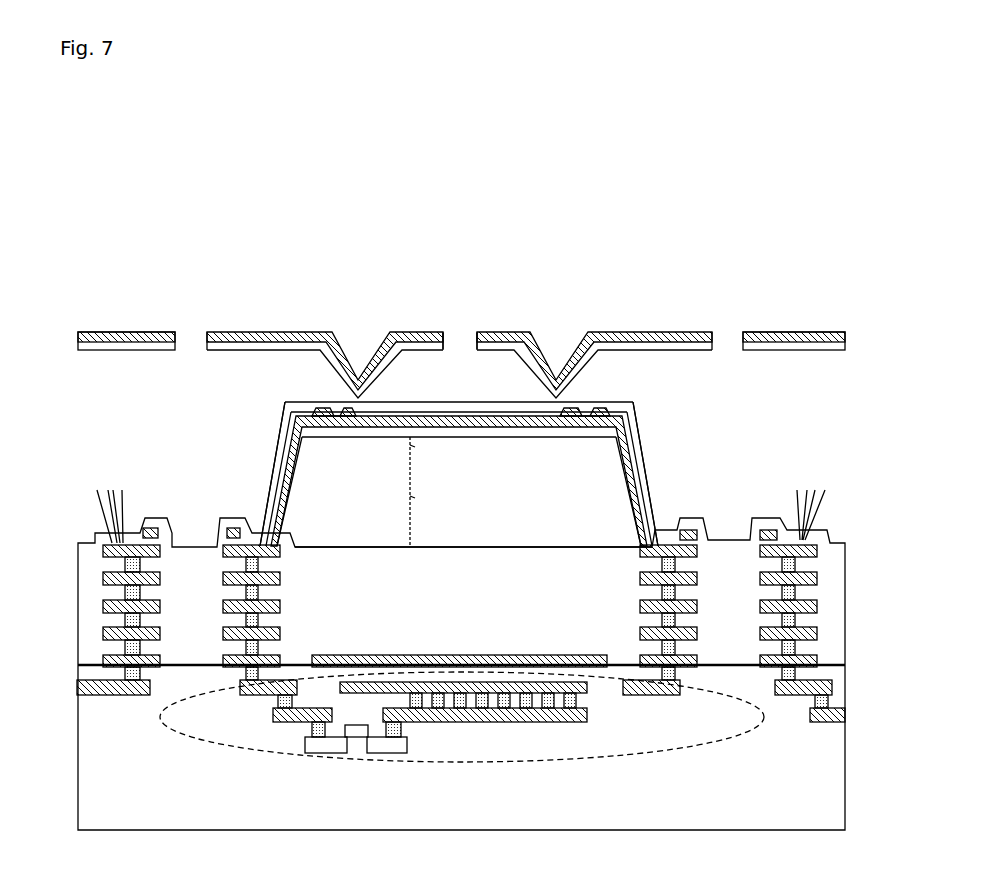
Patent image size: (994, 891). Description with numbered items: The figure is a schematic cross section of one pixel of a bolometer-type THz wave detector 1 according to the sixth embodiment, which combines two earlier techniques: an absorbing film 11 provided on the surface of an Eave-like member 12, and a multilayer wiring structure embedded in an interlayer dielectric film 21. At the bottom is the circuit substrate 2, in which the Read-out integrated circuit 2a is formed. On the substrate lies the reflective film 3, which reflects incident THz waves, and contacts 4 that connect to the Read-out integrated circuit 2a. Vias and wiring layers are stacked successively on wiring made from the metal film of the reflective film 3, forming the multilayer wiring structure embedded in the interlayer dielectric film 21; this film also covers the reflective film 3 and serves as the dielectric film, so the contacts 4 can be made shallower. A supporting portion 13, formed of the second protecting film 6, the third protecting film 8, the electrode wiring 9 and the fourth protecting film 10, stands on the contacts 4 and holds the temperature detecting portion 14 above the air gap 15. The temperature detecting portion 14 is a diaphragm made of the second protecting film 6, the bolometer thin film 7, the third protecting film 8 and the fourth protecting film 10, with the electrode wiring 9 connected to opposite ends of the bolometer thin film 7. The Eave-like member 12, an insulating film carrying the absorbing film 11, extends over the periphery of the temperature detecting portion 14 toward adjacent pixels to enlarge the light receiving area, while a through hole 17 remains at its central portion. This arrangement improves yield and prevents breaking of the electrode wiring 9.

The bolometer-type THz wave detector 1 is at (680, 138).
The circuit substrate 2 is at (175, 757).
The Read-out integrated circuit 2a is at (380, 757).
The reflective film 3 is at (537, 657).
The contacts 4 is at (228, 525).
The second protecting film 6 is at (632, 406).
The bolometer thin film 7 is at (520, 410).
The third protecting film 8 is at (478, 418).
The electrode wiring 9 is at (273, 447).
The fourth protecting film 10 is at (462, 408).
The absorbing film 11 is at (430, 340).
The Eave-like member 12 is at (268, 332).
The supporting portion 13 is at (655, 455).
The temperature detecting portion 14 is at (388, 352).
The air gap 15 is at (435, 491).
The through hole 17 is at (462, 330).
The interlayer dielectric film 21 is at (527, 605).